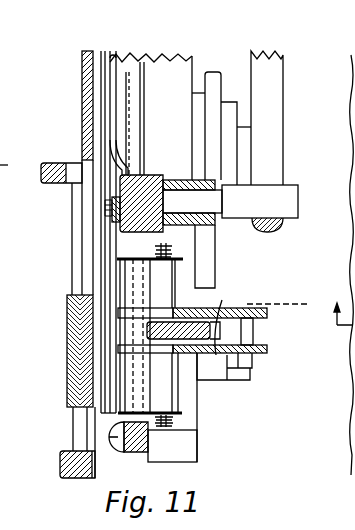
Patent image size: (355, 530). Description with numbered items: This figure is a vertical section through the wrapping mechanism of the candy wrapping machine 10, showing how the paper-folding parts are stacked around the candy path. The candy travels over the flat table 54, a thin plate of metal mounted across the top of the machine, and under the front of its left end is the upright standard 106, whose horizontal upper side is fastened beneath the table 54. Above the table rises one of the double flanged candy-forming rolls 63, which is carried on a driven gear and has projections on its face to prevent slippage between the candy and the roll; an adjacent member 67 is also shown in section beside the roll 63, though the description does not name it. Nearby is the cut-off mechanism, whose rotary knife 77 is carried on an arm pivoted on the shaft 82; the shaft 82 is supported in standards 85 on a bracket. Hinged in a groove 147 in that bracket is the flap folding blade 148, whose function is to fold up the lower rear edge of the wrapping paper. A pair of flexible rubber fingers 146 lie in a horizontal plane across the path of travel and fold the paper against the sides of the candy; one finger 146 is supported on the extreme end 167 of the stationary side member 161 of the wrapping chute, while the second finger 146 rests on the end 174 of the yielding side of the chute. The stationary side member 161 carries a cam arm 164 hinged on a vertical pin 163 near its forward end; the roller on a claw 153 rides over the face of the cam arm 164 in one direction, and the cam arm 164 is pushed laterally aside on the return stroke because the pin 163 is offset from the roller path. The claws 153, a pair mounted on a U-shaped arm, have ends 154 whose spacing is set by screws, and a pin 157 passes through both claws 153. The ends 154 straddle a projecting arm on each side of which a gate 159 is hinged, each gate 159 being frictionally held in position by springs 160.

The apparatus 10 is at (339, 265).
The flat table 54 is at (84, 110).
The double flanged candy-forming roll 63 is at (236, 135).
The upper column member 67 is at (213, 82).
The rotary knife 77 is at (296, 297).
The shaft 82 is at (267, 118).
The standards 85 is at (260, 208).
The upright standard 106 is at (61, 219).
The flexible rubber fingers 146 is at (164, 336).
The groove 147 is at (113, 62).
The flap folding blade 148 is at (120, 133).
The claws 153 is at (223, 308).
The ends 154 is at (224, 366).
The pin 157 is at (247, 329).
The gate 159 is at (170, 285).
The springs 160 is at (162, 252).
The stationary side member 161 is at (243, 524).
The pin 163 is at (192, 201).
The cam arm 164 is at (186, 176).
The extreme end 167 is at (143, 178).
The end 174 is at (123, 452).